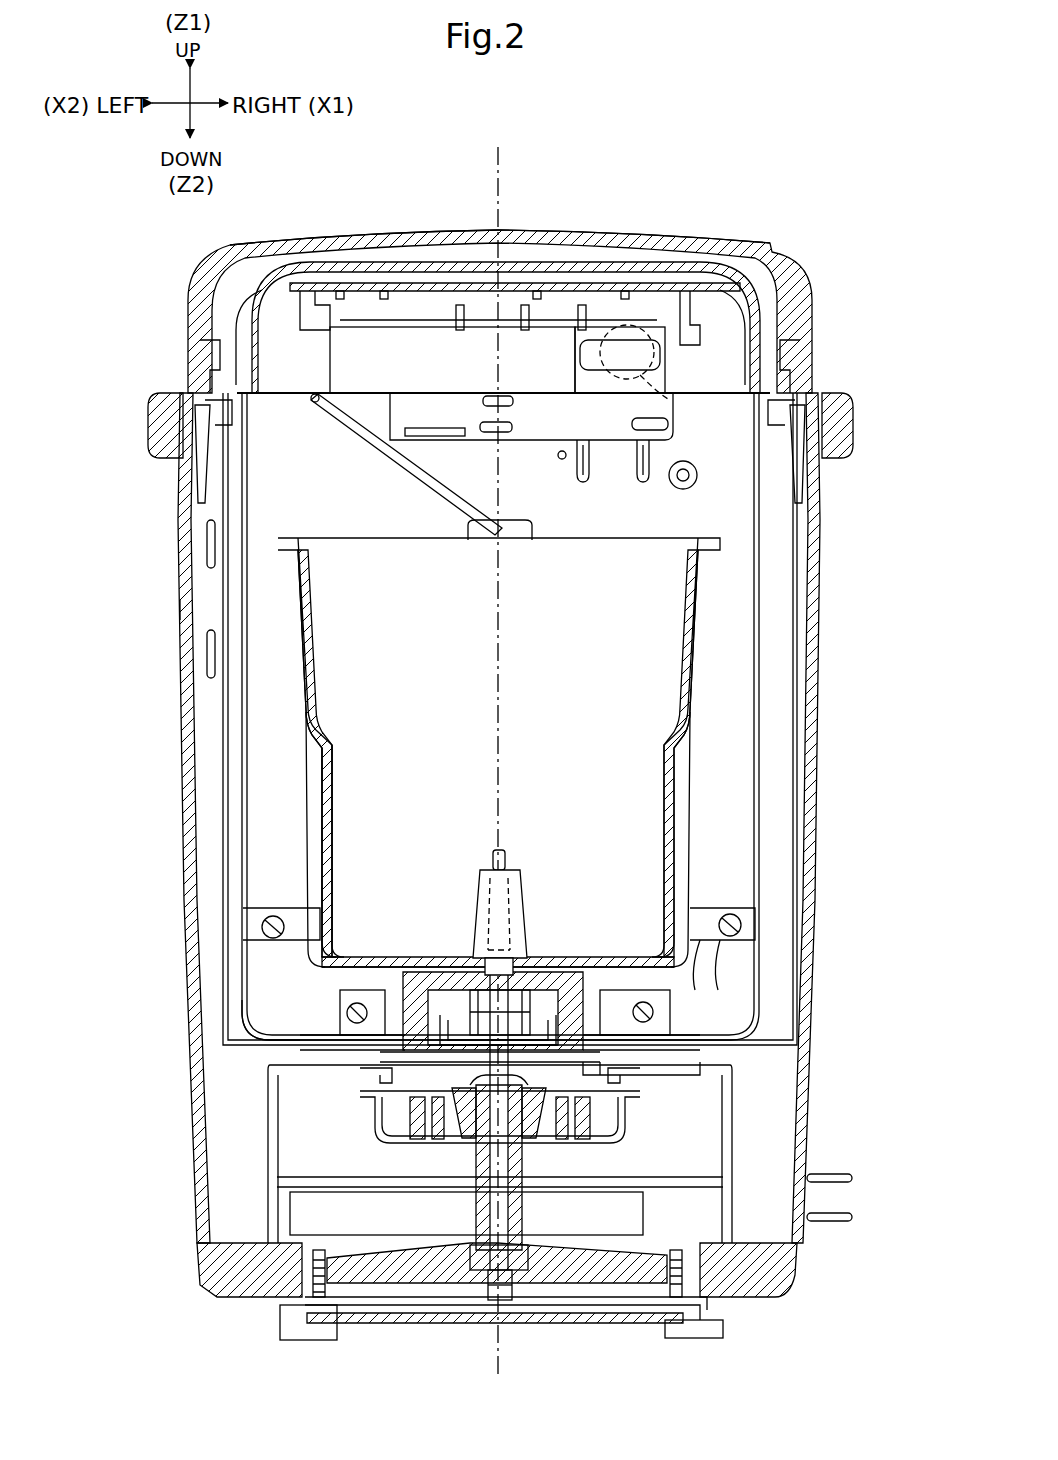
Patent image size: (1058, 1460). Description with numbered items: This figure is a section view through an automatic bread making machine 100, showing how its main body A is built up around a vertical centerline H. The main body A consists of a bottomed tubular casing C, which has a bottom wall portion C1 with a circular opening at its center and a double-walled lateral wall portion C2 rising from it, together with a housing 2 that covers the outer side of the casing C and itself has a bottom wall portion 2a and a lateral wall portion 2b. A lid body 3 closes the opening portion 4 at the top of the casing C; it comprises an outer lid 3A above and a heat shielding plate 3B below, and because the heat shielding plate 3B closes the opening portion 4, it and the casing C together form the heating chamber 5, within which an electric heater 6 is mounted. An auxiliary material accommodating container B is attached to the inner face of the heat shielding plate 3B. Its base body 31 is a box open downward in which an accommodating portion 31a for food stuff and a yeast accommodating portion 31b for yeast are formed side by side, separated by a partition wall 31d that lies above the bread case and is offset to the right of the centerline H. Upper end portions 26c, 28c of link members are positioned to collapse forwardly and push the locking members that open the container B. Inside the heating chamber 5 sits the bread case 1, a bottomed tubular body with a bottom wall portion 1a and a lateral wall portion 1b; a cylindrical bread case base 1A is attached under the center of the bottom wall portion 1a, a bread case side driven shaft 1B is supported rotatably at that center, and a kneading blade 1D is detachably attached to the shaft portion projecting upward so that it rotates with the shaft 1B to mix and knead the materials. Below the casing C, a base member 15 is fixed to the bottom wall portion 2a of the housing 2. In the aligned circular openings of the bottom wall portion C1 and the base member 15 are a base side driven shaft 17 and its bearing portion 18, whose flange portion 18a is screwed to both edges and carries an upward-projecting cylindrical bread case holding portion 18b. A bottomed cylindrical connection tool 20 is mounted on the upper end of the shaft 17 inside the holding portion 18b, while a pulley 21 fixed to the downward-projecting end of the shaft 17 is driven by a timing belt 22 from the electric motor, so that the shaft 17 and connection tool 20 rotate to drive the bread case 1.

The automatic bread making machine 100 is at (818, 147).
The main body A is at (734, 183).
The centerline H is at (498, 745).
The lid body 3 is at (663, 230).
The outer lid 3A is at (563, 228).
The heat shielding plate 3B is at (253, 322).
The opening portion 4 is at (299, 388).
The base body 31 is at (598, 356).
The accommodating portion 31a is at (420, 328).
The yeast accommodating portion 31b is at (660, 382).
The partition wall 31d is at (570, 360).
The upper end portion 28c is at (580, 470).
The upper end portion 26c is at (640, 470).
The auxiliary material accommodating container B is at (437, 450).
The heating chamber 5 is at (300, 492).
The casing C is at (222, 597).
The lateral wall portion C2 is at (245, 712).
The bottom wall portion C1 is at (262, 1034).
The bread case 1 is at (303, 652).
The bottom wall portion 1a is at (360, 957).
The lateral wall portion 1b is at (333, 806).
The bread case base 1A is at (600, 977).
The bread case side driven shaft 1B is at (508, 880).
The kneading blade 1D is at (473, 895).
The electric heater 6 is at (300, 922).
The bearing portion 18 is at (527, 1164).
The flange portion 18a is at (642, 1076).
The bread case holding portion 18b is at (387, 977).
The connection tool 20 is at (448, 1072).
The base member 15 is at (722, 1062).
The housing 2 is at (506, 829).
The bottom wall portion 2a is at (243, 1242).
The lateral wall portion 2b is at (215, 1078).
The timing belt 22 is at (327, 1267).
The pulley 21 is at (370, 1287).
The base side driven shaft 17 is at (490, 1262).